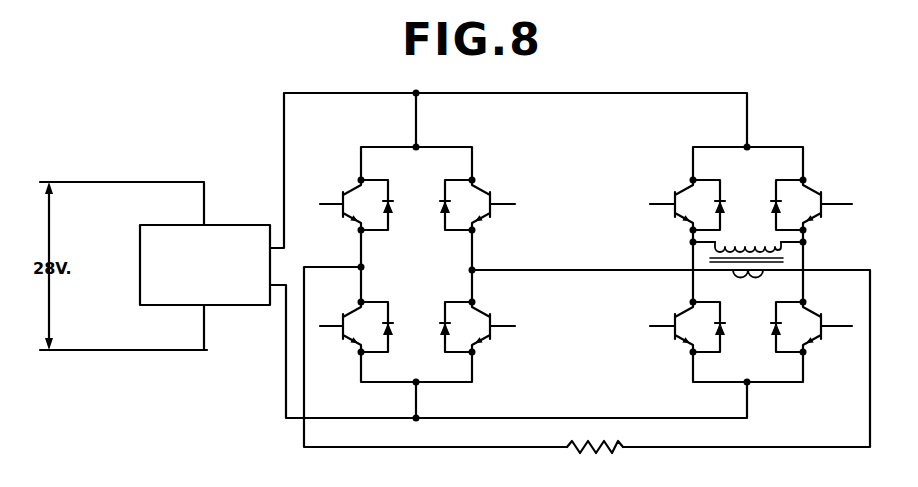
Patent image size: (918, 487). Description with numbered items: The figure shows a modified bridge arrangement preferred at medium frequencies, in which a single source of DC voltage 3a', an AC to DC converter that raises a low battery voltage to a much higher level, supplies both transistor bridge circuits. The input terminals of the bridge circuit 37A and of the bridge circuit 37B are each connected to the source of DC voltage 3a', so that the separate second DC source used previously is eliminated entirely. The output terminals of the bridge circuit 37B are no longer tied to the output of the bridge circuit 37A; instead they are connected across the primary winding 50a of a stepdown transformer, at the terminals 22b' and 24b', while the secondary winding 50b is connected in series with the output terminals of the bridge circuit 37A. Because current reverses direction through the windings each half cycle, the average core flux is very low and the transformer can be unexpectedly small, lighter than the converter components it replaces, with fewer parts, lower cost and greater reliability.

The source of DC voltage 3a' is at (205, 238).
The bridge circuit 37A is at (478, 128).
The bridge circuit 37B is at (711, 134).
The primary winding 50a is at (745, 240).
The secondary winding 50b is at (744, 278).
The primary winding terminal 22b' is at (666, 244).
The primary winding terminal 24b' is at (830, 244).